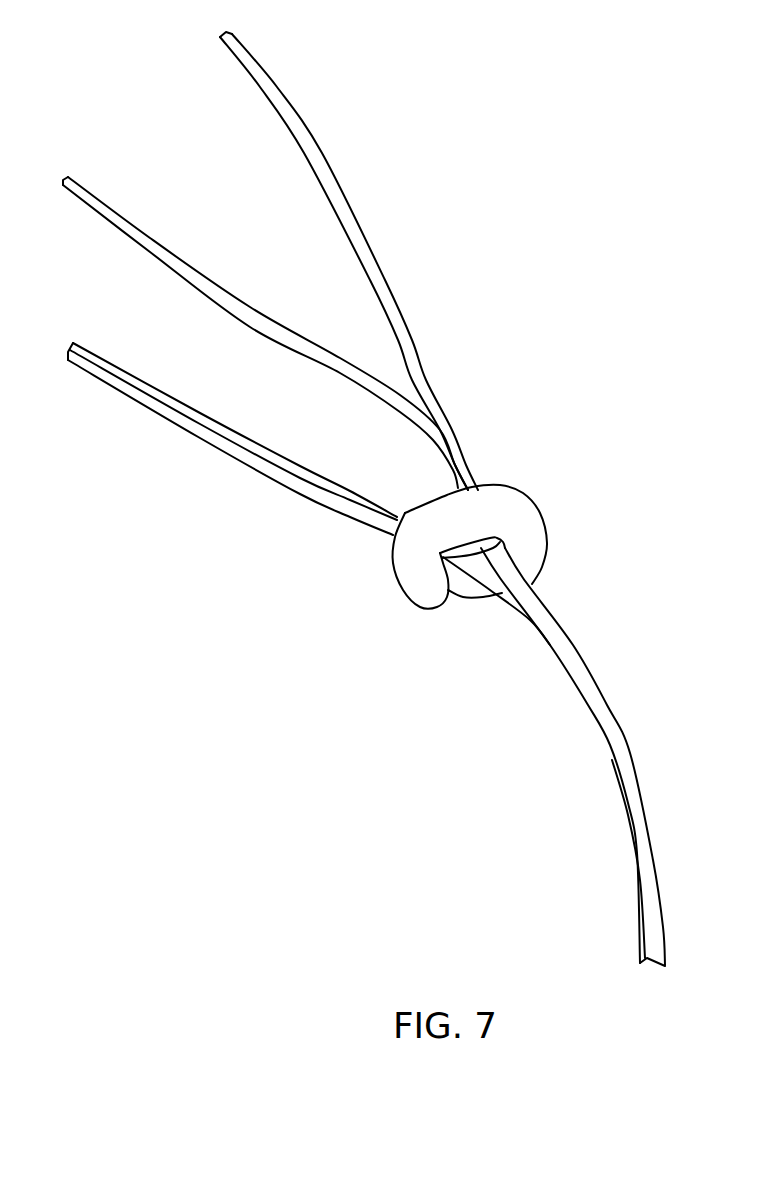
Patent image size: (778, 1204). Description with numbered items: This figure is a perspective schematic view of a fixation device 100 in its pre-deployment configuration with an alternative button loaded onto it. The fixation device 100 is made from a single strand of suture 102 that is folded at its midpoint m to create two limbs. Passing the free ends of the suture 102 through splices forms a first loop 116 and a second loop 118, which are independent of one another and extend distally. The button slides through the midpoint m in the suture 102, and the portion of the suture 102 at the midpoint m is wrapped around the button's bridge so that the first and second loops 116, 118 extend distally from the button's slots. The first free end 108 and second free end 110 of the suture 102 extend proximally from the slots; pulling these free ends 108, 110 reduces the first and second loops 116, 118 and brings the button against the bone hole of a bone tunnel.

The fixation device 100 is at (118, 131).
The suture 102 is at (205, 470).
The first free end 108 is at (518, 613).
The second free end 110 is at (535, 607).
The first loop 116 is at (382, 280).
The second loop 118 is at (128, 232).
The midpoint m is at (475, 542).